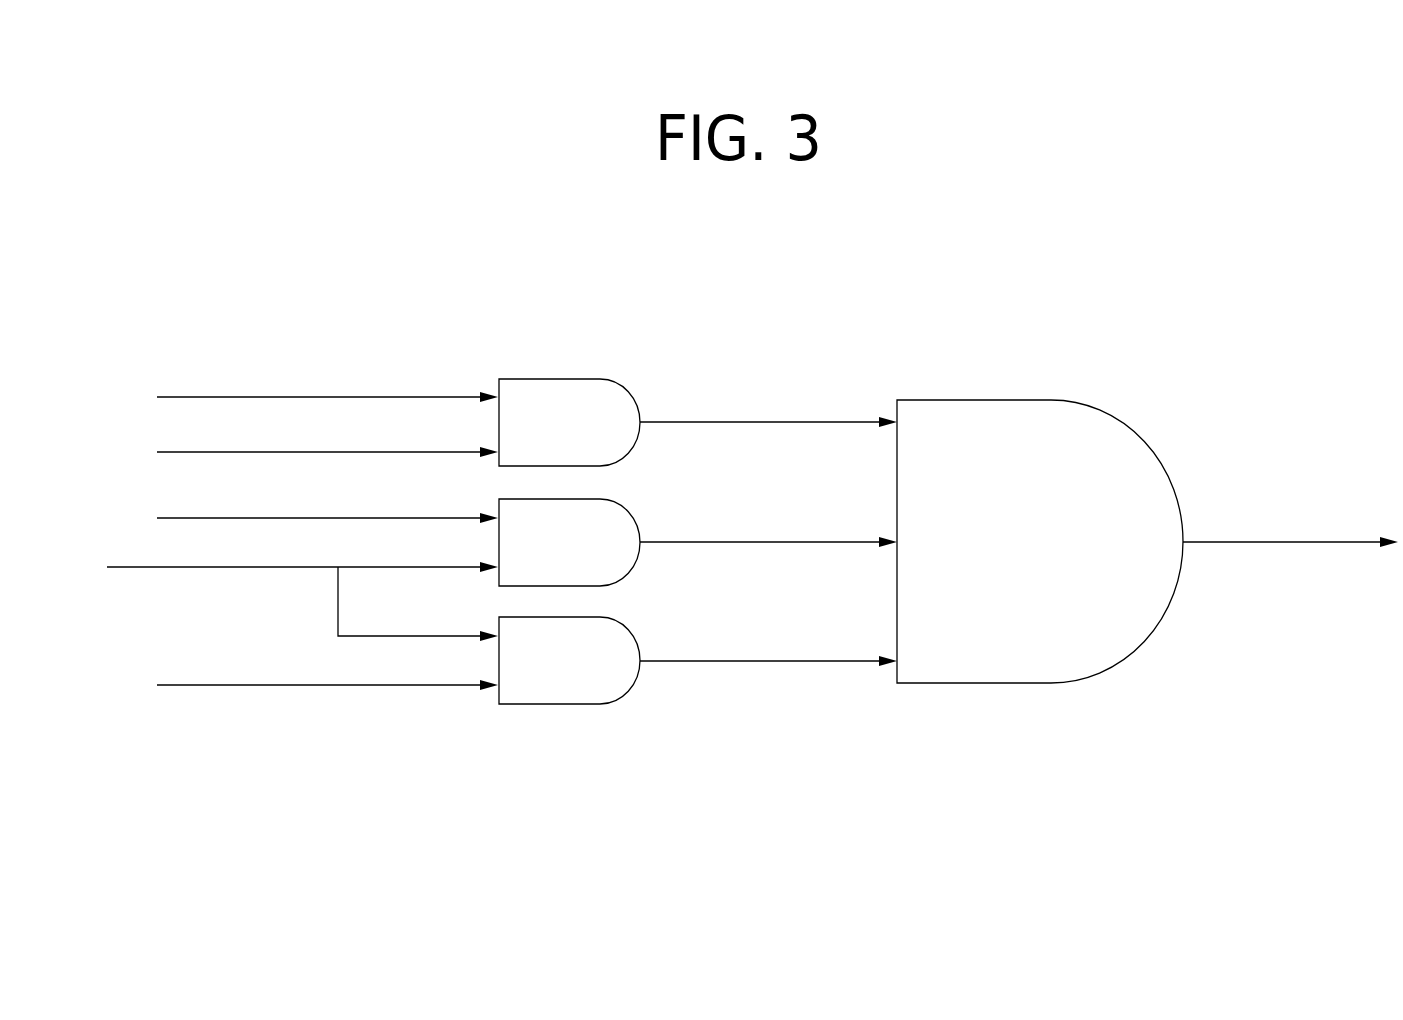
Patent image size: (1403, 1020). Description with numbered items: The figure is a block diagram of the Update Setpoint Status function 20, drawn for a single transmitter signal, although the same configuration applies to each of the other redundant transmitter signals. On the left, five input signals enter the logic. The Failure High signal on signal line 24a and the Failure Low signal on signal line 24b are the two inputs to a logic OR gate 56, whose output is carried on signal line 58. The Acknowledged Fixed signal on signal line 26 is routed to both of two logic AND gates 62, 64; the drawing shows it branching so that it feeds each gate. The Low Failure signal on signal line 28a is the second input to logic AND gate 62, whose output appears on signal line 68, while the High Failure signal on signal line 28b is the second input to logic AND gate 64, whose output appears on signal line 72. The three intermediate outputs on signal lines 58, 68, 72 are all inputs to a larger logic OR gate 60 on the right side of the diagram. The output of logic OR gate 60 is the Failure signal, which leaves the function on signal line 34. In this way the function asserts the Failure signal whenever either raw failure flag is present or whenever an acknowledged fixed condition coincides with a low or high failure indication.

The Update Setpoint Status function 20 is at (1102, 317).
The signal line 24a is at (438, 396).
The signal line 24b is at (327, 432).
The signal line 28a is at (327, 496).
The signal line 26 is at (402, 568).
The signal line 28b is at (413, 687).
The logic OR gate 56 is at (627, 457).
The logic AND gate 62 is at (627, 577).
The logic AND gate 64 is at (627, 695).
The signal line 58 is at (782, 420).
The signal line 68 is at (782, 540).
The signal line 72 is at (782, 663).
The logic OR gate 60 is at (1024, 687).
The signal line 34 is at (1285, 546).